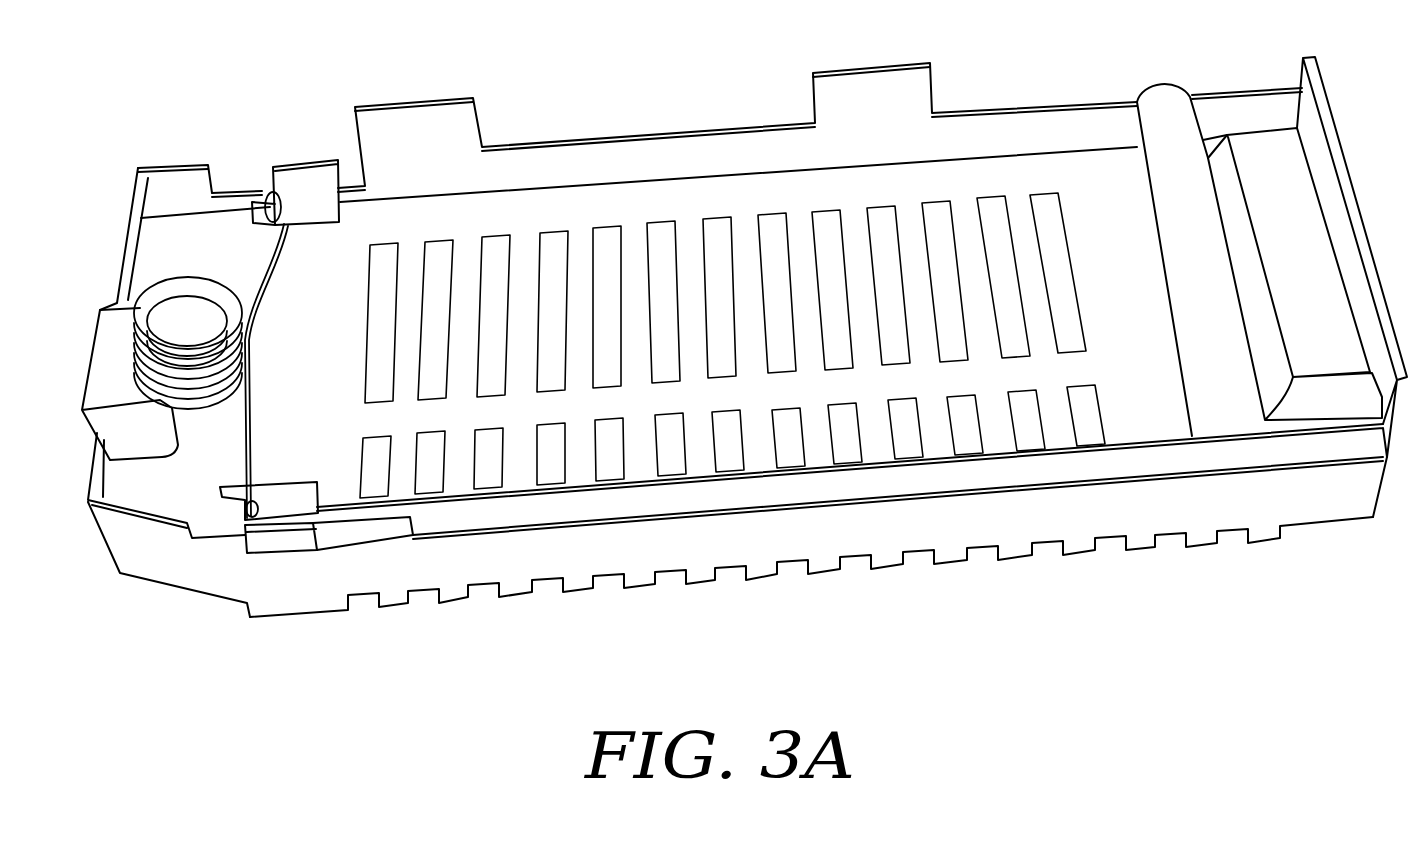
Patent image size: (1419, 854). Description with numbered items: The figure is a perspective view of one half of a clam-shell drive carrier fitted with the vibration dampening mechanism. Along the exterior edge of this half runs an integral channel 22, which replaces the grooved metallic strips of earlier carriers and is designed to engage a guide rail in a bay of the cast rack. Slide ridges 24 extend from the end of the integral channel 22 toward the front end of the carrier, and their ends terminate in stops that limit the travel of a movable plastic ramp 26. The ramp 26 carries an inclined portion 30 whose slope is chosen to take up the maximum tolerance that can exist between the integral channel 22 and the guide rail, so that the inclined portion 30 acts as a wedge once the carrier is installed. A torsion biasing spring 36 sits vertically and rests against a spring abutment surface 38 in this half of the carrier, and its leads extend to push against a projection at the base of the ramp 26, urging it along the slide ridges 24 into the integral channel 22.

The integral channel 22 is at (840, 483).
The slide ridge 24 is at (235, 187).
The movable plastic ramp 26 is at (307, 183).
The inclined portion 30 is at (390, 532).
The torsion biasing spring 36 is at (160, 293).
The spring abutment surface 38 is at (178, 428).